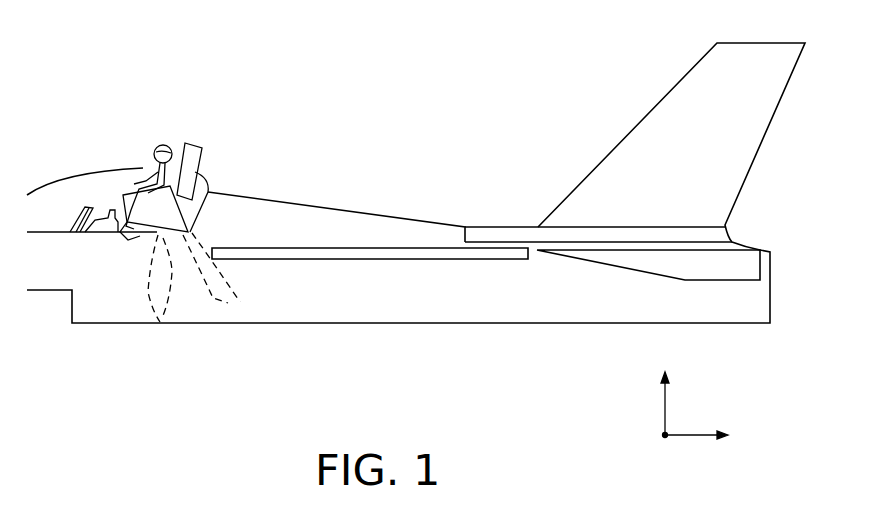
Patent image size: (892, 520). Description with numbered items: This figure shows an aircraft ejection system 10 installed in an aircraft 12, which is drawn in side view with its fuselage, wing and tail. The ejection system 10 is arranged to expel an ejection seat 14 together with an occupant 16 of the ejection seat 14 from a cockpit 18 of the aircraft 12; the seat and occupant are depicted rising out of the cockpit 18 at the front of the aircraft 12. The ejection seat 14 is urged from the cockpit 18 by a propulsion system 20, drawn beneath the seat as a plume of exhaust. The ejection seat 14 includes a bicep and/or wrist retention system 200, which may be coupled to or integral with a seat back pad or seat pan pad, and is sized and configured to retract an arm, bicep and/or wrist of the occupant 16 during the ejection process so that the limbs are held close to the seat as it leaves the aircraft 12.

The aircraft ejection system 10 is at (328, 115).
The aircraft 12 is at (440, 300).
The ejection seat 14 is at (203, 154).
The occupant 16 is at (152, 150).
The cockpit 18 is at (64, 216).
The propulsion system 20 is at (155, 278).
The bicep and/or wrist retention system 200 is at (190, 178).